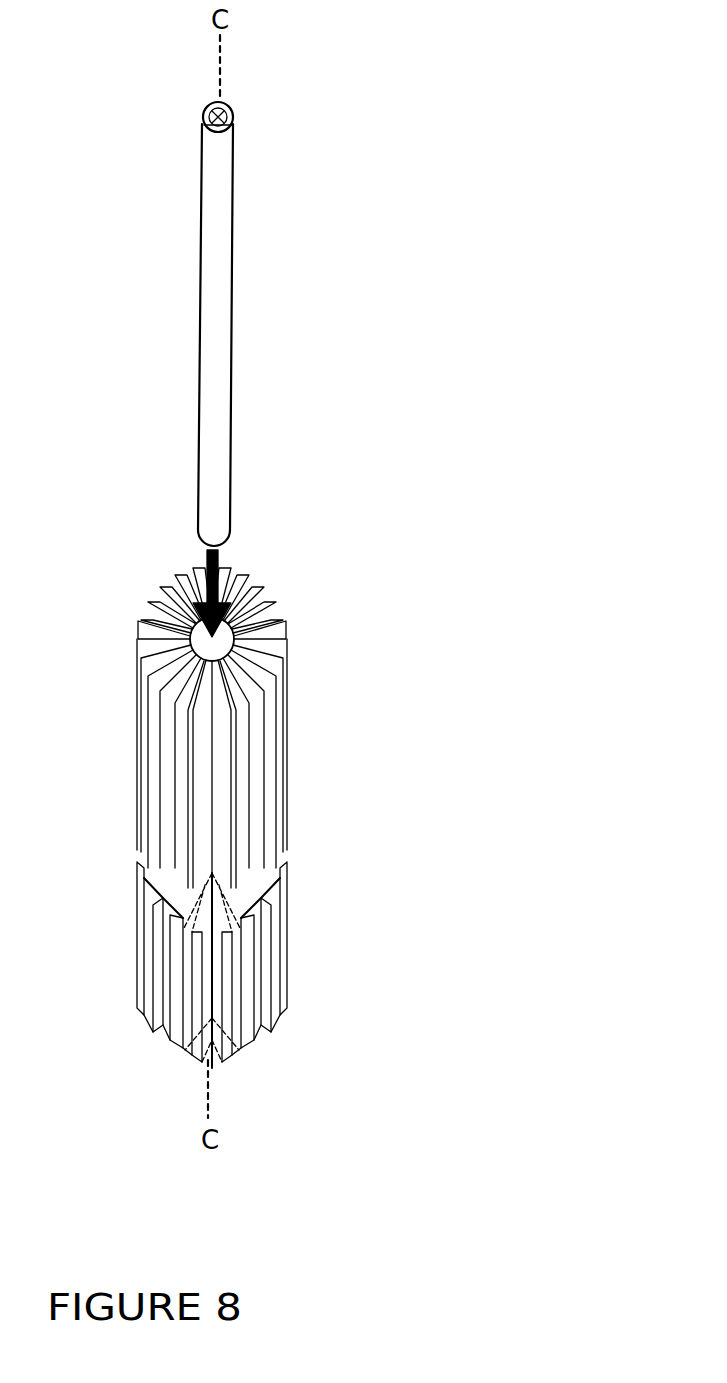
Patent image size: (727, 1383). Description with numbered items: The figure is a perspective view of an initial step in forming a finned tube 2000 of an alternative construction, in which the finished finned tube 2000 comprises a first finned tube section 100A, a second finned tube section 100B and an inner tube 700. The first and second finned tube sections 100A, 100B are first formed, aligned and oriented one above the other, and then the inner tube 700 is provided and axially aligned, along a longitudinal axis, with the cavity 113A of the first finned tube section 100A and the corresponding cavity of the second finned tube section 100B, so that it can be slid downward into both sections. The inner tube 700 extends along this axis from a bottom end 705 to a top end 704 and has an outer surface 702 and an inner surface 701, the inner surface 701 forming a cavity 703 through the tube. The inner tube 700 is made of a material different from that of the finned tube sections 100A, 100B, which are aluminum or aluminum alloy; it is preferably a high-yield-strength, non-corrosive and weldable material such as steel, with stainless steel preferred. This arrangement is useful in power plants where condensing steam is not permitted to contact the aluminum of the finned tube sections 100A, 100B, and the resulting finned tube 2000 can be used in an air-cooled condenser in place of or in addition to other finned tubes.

The inner tube 700 is at (247, 310).
The inner surface 701 is at (228, 105).
The outer surface 702 is at (219, 241).
The cavity 703 is at (211, 106).
The top end 704 is at (232, 121).
The bottom end 705 is at (222, 552).
The cavity 113A is at (233, 617).
The finned tube 2000 is at (287, 799).
The first finned tube section 100A is at (271, 709).
The second finned tube section 100B is at (287, 940).